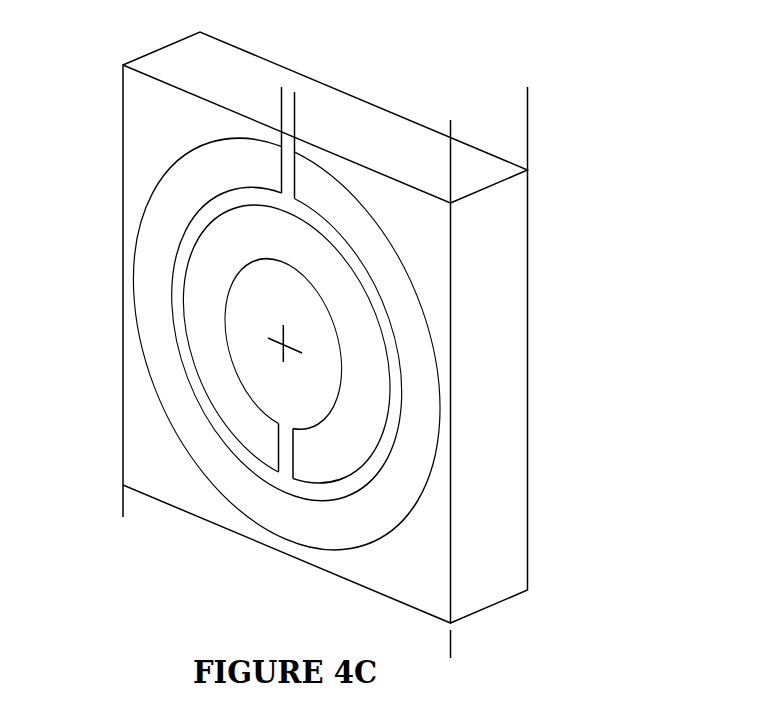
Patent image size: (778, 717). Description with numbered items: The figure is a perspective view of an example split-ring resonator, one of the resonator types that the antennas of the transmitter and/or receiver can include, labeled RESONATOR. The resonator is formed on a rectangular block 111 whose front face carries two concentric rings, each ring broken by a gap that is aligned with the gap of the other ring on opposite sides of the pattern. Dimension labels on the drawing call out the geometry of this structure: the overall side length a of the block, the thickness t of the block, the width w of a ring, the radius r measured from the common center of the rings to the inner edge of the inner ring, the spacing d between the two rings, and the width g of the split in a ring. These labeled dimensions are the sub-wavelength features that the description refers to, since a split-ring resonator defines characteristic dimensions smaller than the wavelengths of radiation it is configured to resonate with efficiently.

The resonator substrate block 111 is at (145, 129).
The resonator RESONATOR is at (543, 180).
The ring gap width g is at (252, 83).
The substrate thickness t is at (528, 97).
The unit cell side length a is at (450, 649).
The ring width w is at (382, 258).
The inner ring radius r is at (285, 352).
The spacing between rings d is at (247, 398).